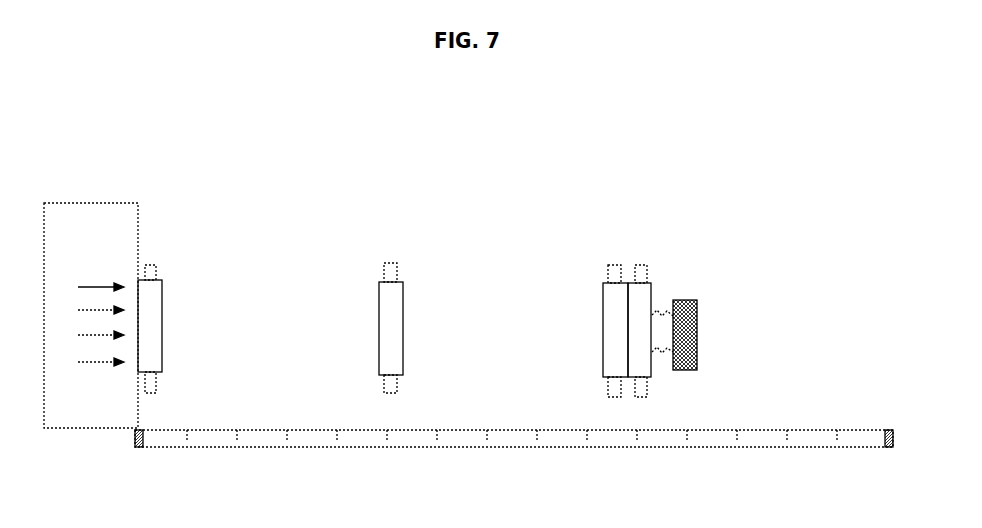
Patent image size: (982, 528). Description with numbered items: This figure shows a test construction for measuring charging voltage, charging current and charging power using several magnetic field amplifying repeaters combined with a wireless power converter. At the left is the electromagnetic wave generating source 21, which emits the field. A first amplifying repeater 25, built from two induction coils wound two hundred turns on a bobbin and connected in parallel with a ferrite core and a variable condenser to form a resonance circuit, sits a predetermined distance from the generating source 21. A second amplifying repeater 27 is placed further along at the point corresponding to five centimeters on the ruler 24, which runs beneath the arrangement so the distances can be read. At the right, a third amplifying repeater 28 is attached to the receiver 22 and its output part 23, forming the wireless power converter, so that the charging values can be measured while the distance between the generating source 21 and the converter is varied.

The electromagnetic wave generating source 21 is at (106, 228).
The receiver 22 is at (684, 314).
The output part 23 is at (723, 325).
The ruler 24 is at (521, 428).
The amplifying repeater 25 is at (187, 329).
The amplifying repeater 27 is at (430, 328).
The amplifying repeater 28 is at (567, 331).